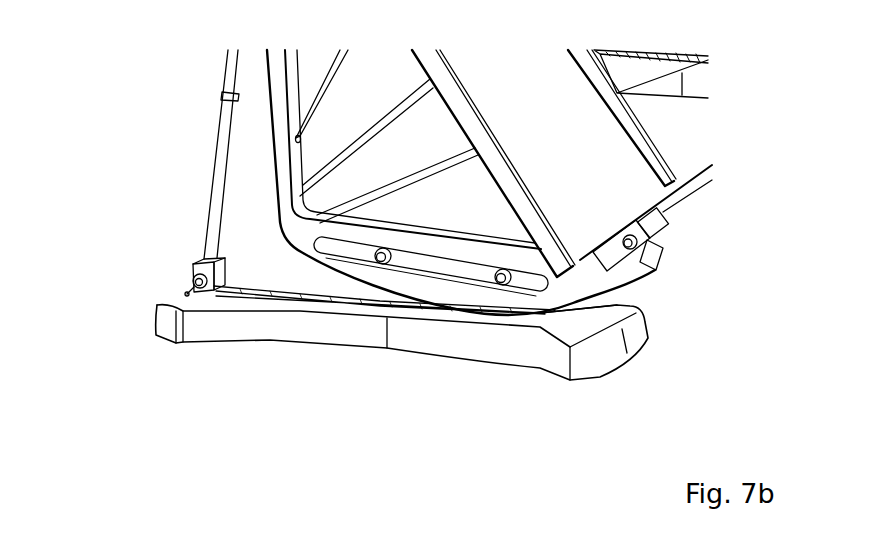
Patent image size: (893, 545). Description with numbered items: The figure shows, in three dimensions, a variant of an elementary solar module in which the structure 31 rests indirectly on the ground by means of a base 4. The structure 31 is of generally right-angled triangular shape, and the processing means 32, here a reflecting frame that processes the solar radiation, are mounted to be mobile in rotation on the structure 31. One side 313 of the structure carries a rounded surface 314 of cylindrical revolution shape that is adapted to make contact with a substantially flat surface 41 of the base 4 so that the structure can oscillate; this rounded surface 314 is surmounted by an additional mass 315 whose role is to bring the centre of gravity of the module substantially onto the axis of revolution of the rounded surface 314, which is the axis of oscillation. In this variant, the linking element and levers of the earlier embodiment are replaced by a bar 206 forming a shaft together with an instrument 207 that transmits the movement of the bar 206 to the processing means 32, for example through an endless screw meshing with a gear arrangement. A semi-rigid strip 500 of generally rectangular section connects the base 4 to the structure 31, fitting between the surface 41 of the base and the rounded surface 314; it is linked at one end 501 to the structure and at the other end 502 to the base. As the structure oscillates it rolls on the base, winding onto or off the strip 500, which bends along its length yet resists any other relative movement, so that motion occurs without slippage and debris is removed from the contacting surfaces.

The base 4 is at (423, 338).
The structure 31 is at (281, 100).
The processing means 32 is at (507, 111).
The flat surface 41 is at (177, 297).
The bar 206 is at (690, 190).
The instrument 207 is at (658, 250).
The side 313 is at (463, 308).
The rounded surface 314 is at (335, 277).
The additional mass 315 is at (425, 272).
The semi-rigid strip 500 is at (298, 298).
The end 501 is at (650, 270).
The end 502 is at (228, 288).